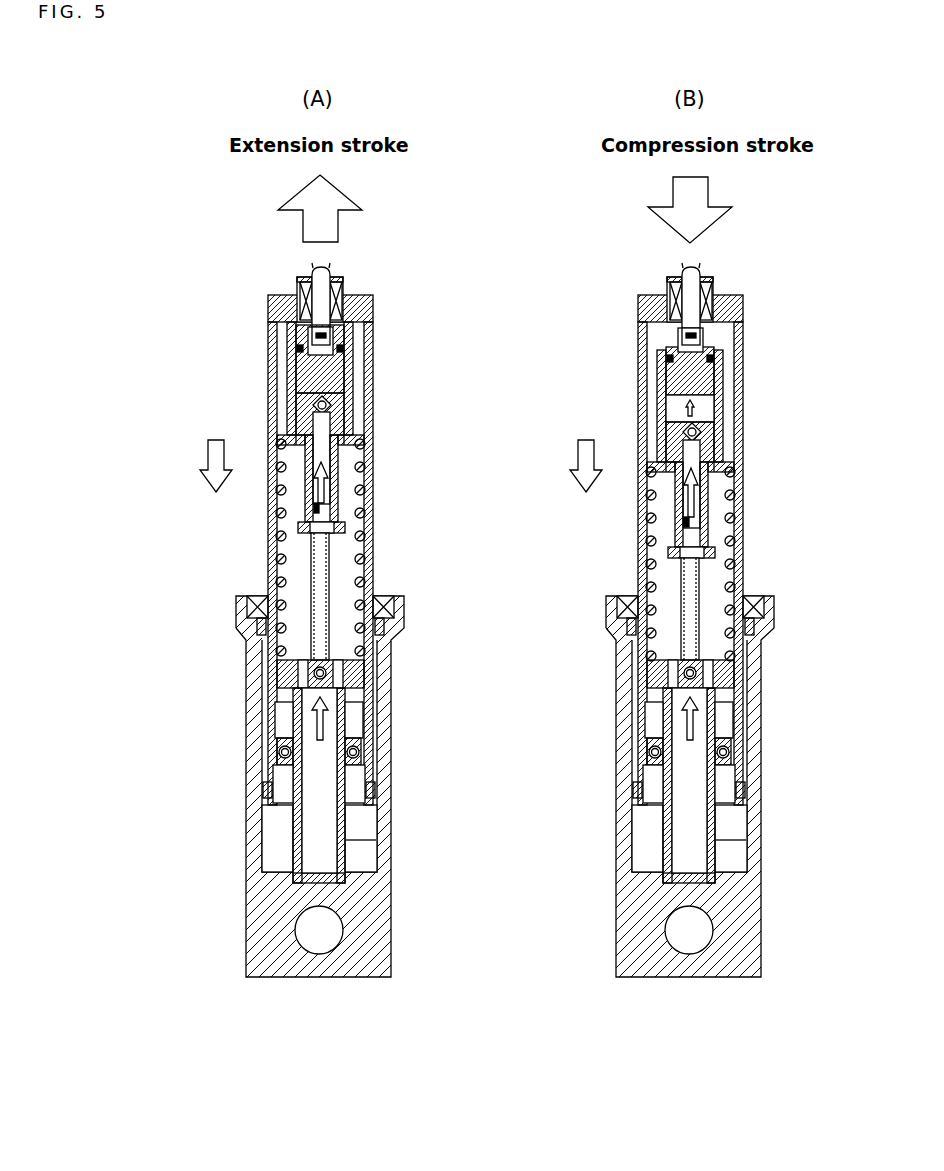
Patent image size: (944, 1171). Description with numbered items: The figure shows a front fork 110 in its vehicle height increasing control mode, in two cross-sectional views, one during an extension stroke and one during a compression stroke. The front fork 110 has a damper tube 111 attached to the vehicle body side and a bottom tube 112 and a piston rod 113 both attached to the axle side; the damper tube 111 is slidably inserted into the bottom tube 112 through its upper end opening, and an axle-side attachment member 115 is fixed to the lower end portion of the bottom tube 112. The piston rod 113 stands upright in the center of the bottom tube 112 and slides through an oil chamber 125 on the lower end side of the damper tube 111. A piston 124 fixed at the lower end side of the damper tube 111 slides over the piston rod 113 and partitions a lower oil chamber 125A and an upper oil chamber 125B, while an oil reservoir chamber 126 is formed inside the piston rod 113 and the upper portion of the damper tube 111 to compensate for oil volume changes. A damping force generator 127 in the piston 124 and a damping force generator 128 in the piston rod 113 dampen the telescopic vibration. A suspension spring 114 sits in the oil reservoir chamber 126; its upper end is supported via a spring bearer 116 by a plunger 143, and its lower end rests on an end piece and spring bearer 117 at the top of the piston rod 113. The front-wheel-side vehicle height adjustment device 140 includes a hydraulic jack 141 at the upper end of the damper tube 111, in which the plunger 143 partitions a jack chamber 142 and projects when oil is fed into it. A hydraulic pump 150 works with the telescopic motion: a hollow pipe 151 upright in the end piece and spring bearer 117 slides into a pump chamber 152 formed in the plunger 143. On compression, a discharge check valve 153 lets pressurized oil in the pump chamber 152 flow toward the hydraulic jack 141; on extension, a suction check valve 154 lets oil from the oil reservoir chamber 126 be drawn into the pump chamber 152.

The front fork 110 is at (233, 283).
The damper tube 111 is at (270, 567).
The bottom tube 112 is at (246, 858).
The piston rod 113 is at (292, 820).
The suspension spring 114 is at (276, 526).
The axle-side attachment member 115 is at (257, 928).
The spring bearer 116 is at (300, 442).
The end piece and spring bearer 117 is at (280, 672).
The piston 124 is at (365, 770).
The oil chamber 125 is at (360, 822).
The lower oil chamber 125A is at (362, 838).
The upper oil chamber 125B is at (284, 721).
The oil reservoir chamber 126 is at (350, 550).
The damping force generator 127 is at (286, 748).
The damping force generator 128 is at (346, 718).
The front-wheel-side vehicle height adjustment device 140 is at (280, 358).
The hydraulic jack 141 is at (340, 380).
The jack chamber 142 is at (708, 398).
The plunger 143 is at (345, 422).
The hydraulic pump 150 is at (340, 482).
The hollow pipe 151 is at (330, 575).
The pump chamber 152 is at (322, 448).
The discharge check valve 153 is at (328, 406).
The suction check valve 154 is at (350, 670).